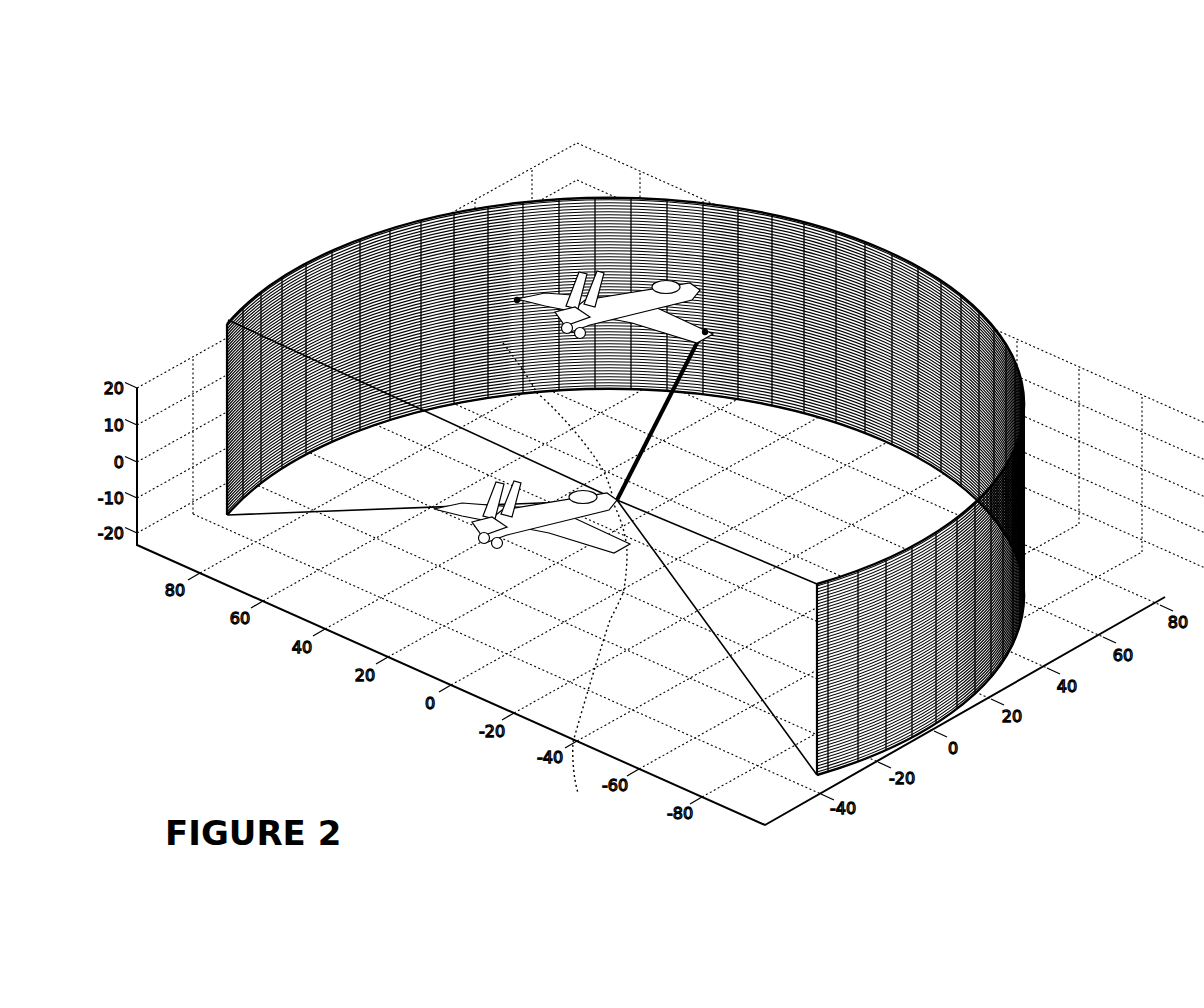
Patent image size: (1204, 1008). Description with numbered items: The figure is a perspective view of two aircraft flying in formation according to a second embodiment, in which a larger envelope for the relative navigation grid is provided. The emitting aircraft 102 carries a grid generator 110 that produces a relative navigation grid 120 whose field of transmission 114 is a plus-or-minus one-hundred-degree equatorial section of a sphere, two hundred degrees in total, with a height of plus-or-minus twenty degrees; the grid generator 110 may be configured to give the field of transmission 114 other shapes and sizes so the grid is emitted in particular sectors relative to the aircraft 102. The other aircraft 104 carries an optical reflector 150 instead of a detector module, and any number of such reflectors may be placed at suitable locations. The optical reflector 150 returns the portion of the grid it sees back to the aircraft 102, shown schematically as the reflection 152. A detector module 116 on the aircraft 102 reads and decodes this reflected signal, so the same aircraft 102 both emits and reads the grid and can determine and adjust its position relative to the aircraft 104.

The aircraft 102 is at (490, 548).
The aircraft 104 is at (655, 268).
The grid generator 110 is at (565, 581).
The field of transmission 114 is at (796, 477).
The detector module 116 is at (368, 292).
The relative navigation grid 120 is at (930, 275).
The optical reflector 150 is at (517, 300).
The reflection 152 is at (687, 443).